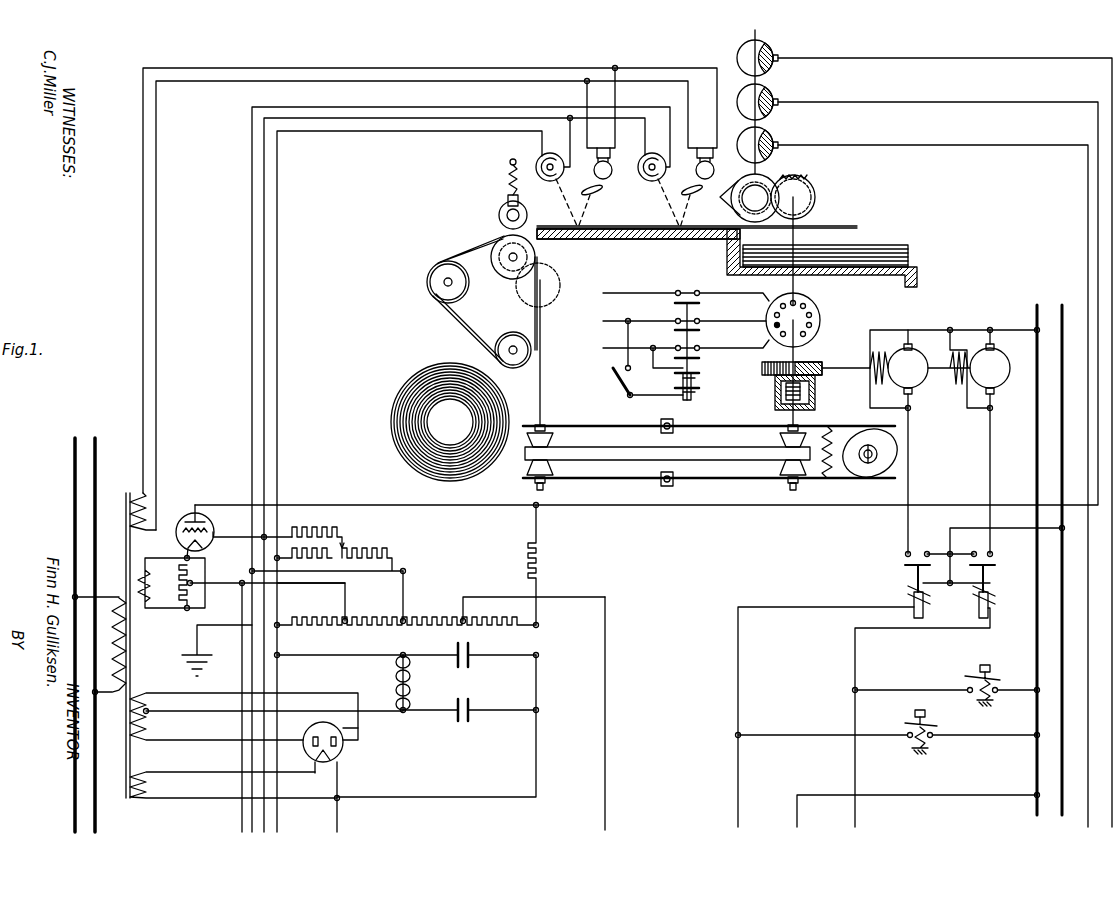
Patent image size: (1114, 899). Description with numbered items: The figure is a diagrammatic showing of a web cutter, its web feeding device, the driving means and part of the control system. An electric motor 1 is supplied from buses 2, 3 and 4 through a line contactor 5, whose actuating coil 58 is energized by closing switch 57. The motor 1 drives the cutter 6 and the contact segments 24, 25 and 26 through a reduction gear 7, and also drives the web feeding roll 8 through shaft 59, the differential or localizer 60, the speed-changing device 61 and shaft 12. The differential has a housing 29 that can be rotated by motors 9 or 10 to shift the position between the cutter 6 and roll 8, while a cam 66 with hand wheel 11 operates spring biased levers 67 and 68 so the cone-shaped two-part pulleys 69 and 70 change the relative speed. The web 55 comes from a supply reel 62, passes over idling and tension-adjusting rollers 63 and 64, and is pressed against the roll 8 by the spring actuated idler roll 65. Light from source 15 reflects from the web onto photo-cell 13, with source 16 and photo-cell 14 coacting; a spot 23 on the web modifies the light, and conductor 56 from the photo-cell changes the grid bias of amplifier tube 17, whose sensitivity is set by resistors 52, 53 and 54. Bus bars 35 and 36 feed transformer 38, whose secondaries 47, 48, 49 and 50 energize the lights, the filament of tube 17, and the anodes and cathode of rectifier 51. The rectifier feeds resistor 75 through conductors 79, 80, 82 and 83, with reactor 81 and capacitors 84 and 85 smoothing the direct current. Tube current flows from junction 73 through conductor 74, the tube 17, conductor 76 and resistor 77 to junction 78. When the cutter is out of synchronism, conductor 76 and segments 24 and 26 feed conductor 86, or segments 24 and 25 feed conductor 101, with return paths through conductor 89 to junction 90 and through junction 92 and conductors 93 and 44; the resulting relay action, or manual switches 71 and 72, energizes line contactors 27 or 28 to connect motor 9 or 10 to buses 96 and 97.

The electric motor 1 is at (804, 311).
The bus 2 is at (618, 293).
The bus 3 is at (612, 321).
The bus 4 is at (611, 348).
The line contactor 5 is at (701, 351).
The cutter 6 is at (772, 180).
The reduction gear 7 is at (816, 200).
The web-feeding roll 8 is at (535, 257).
The motor 9 is at (902, 369).
The motor 10 is at (977, 369).
The hand wheel 11 is at (876, 455).
The shaft 12 is at (545, 380).
The photo-cell 13 is at (545, 158).
The photo-cell 14 is at (646, 178).
The source of light 15 is at (612, 161).
The source of light 16 is at (714, 165).
The amplifier tube 17 is at (234, 520).
The spot 23 is at (538, 228).
The contact segment 24 is at (775, 92).
The contact segment 25 is at (774, 48).
The contact segment 26 is at (774, 135).
The line contactor 27 is at (844, 696).
The line contactor 28 is at (939, 696).
The housing 29 is at (816, 396).
The bus bar 35 is at (75, 478).
The bus bar 36 is at (96, 466).
The transformer 38 is at (118, 645).
The conductor 44 is at (457, 107).
The secondary winding 47 is at (148, 502).
The secondary winding 48 is at (145, 584).
The secondary winding 49 is at (150, 720).
The secondary winding 50 is at (150, 784).
The rectifier 51 is at (339, 777).
The resistor 52 is at (390, 548).
The resistor 53 is at (338, 528).
The resistor 54 is at (310, 553).
The web 55 is at (460, 330).
The conductor 56 is at (540, 118).
The switch 57 is at (612, 384).
The actuating coil 58 is at (695, 380).
The shaft 59 is at (812, 360).
The differential 60 is at (778, 392).
The speed-changing device 61 is at (667, 454).
The supply reel 62 is at (390, 422).
The idling and tension-adjusting roller 63 is at (428, 283).
The idling and tension-adjusting roller 64 is at (525, 360).
The spring actuated idler roll 65 is at (498, 214).
The cam 66 is at (872, 470).
The spring biased lever 67 is at (602, 482).
The spring biased lever 68 is at (618, 428).
The cone-shaped two-part pulley 69 is at (780, 468).
The cone-shaped two-part pulley 70 is at (528, 478).
The switch 71 is at (932, 730).
The switch 72 is at (990, 680).
The junction 73 is at (347, 617).
The conductor 74 is at (314, 588).
The resistor 75 is at (380, 634).
The conductor 76 is at (1098, 278).
The resistor 77 is at (545, 565).
The junction 78 is at (540, 624).
The conductor 79 is at (360, 730).
The conductor 80 is at (540, 684).
The reactor 81 is at (412, 683).
The conductor 82 is at (374, 708).
The conductor 83 is at (195, 741).
The capacitor 84 is at (470, 663).
The capacitor 85 is at (470, 702).
The conductor 86 is at (963, 147).
The conductor 89 is at (606, 798).
The junction 90 is at (466, 618).
The junction 92 is at (405, 618).
The conductor 93 is at (360, 571).
The bus 96 is at (1037, 475).
The bus 97 is at (1062, 484).
The conductor 101 is at (948, 60).